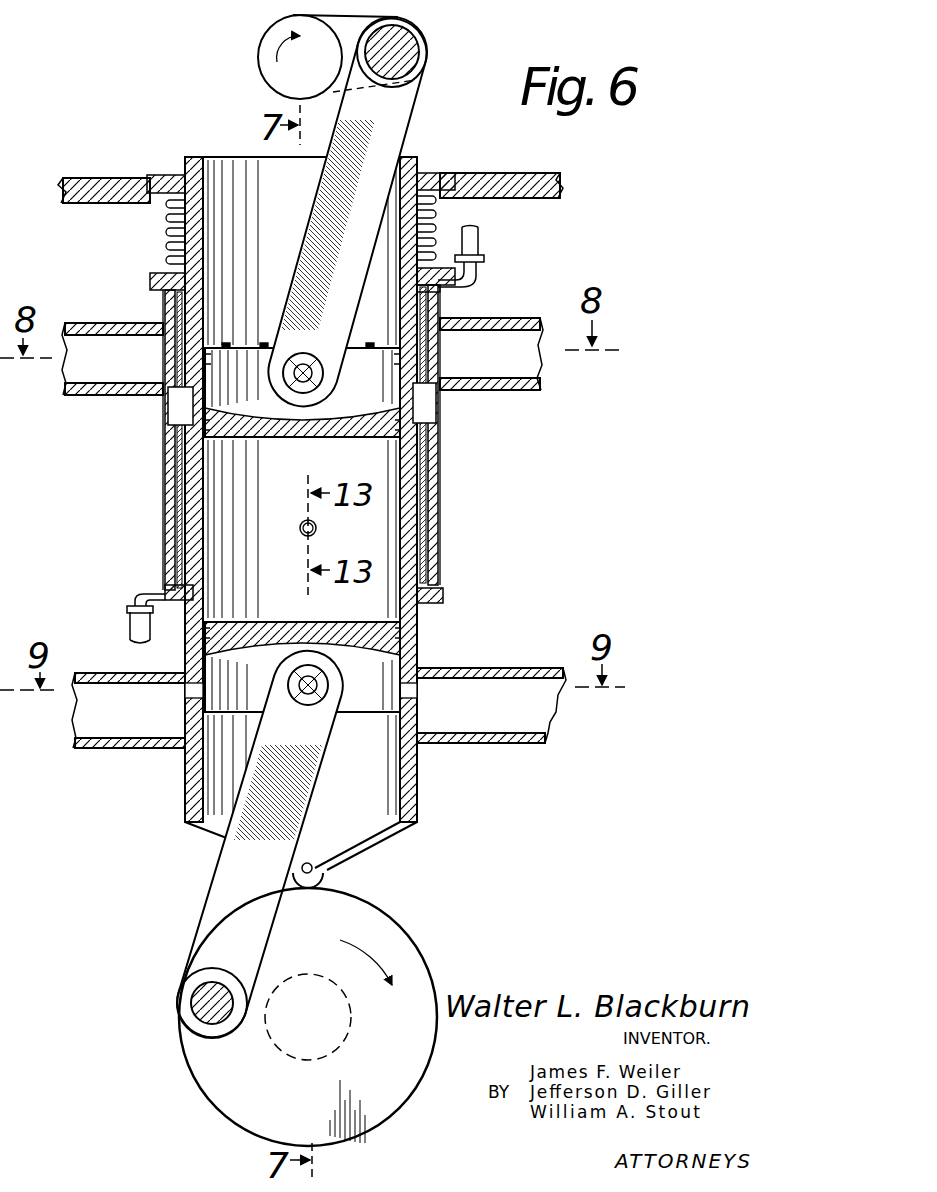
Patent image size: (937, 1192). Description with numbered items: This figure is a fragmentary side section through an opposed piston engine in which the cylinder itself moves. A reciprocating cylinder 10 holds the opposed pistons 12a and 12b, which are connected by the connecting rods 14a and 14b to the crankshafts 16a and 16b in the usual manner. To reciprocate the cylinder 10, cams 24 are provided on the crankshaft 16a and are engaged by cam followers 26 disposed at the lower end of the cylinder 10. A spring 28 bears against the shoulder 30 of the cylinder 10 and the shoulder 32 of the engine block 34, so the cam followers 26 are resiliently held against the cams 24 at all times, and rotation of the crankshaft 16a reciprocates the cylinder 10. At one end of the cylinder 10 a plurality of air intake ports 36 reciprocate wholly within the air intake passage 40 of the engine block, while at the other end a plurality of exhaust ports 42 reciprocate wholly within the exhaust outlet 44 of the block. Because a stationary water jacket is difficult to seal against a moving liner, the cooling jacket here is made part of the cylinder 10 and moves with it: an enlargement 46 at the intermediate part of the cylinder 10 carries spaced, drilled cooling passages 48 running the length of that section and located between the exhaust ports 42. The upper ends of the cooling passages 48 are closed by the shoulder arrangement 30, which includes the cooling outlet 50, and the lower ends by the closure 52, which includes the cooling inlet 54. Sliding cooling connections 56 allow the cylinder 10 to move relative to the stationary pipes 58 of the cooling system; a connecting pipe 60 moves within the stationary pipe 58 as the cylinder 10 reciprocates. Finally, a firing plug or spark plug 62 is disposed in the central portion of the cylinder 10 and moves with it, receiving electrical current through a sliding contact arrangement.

The reciprocating cylinder 10 is at (418, 636).
The opposed piston 12a is at (310, 636).
The opposed piston 12b is at (320, 438).
The connecting rod 14a is at (225, 863).
The connecting rod 14b is at (395, 119).
The crankshaft 16a is at (266, 1058).
The crankshaft 16b is at (258, 55).
The cam 24 is at (405, 940).
The cam follower 26 is at (325, 873).
The spring 28 is at (168, 236).
The shoulder 30 is at (150, 281).
The shoulder 32 is at (160, 175).
The engine block 34 is at (82, 178).
The air intake port 36 is at (418, 691).
The air intake passage 40 is at (555, 713).
The exhaust port 42 is at (370, 343).
The exhaust outlet 44 is at (498, 362).
The enlargement 46 is at (441, 466).
The cooling passage 48 is at (426, 489).
The cooling outlet 50 is at (455, 292).
The closure 52 is at (445, 598).
The cooling inlet 54 is at (179, 601).
The sliding cooling connection 56 is at (486, 259).
The stationary pipe 58 is at (480, 237).
The connecting pipe 60 is at (478, 274).
The spark plug 62 is at (317, 528).